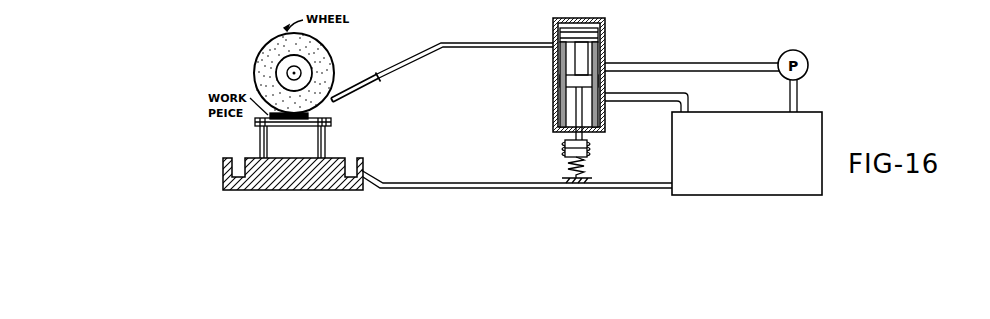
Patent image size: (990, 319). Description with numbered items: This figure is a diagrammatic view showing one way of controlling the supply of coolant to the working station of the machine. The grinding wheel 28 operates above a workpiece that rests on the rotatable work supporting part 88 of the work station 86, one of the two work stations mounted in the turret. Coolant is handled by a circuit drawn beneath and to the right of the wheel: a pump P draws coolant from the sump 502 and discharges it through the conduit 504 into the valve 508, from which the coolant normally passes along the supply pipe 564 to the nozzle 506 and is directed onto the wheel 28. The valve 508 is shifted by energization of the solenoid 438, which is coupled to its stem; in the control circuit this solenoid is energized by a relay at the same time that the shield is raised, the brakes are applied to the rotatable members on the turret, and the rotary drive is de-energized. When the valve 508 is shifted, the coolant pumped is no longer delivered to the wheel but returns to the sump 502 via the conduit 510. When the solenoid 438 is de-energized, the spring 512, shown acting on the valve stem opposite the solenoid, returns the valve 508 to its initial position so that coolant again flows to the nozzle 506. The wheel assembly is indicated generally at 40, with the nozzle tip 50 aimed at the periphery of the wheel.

The wheel 28 is at (257, 76).
The coolant nozzle 50 is at (355, 81).
The nozzle 506 is at (360, 84).
The coolant supply pipe 564 is at (441, 44).
The valve 508 is at (553, 90).
The conduit 504 is at (629, 63).
The conduit 510 is at (650, 101).
The sump 502 is at (717, 115).
The solenoid 438 is at (592, 147).
The spring 512 is at (590, 167).
The rotatable work supporting part 88 is at (331, 122).
The work station 86 is at (264, 133).
The coolant system 40 is at (862, 0).